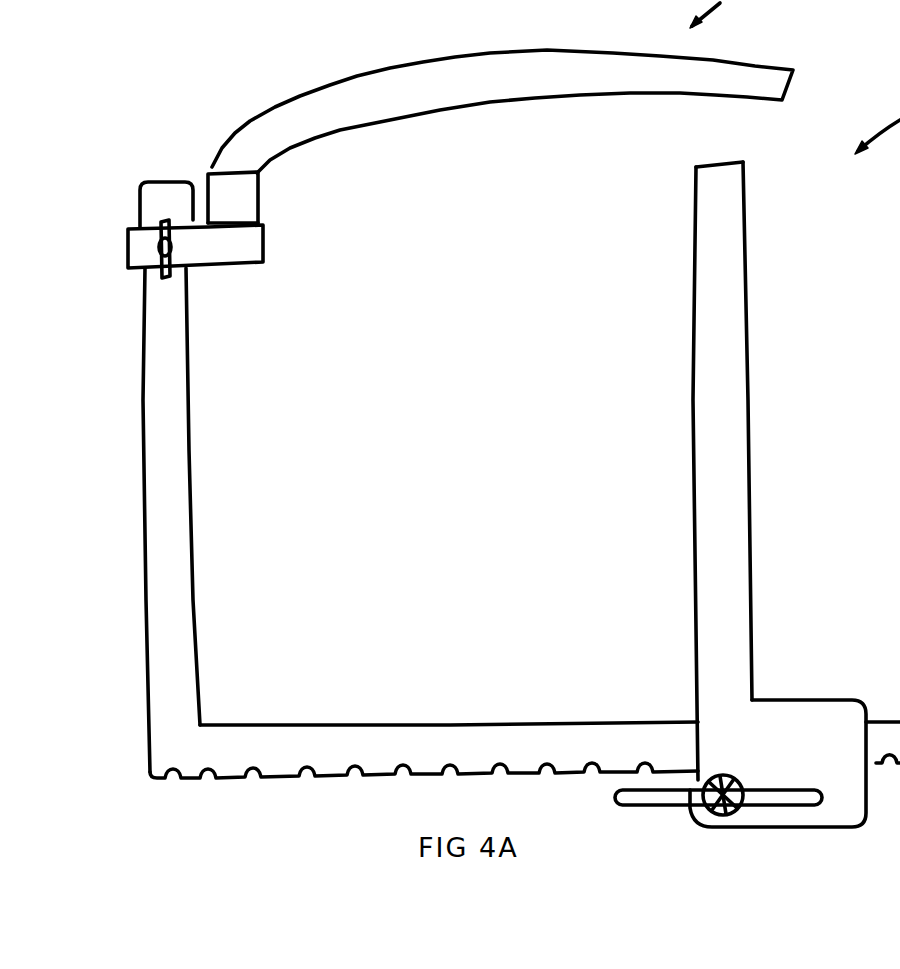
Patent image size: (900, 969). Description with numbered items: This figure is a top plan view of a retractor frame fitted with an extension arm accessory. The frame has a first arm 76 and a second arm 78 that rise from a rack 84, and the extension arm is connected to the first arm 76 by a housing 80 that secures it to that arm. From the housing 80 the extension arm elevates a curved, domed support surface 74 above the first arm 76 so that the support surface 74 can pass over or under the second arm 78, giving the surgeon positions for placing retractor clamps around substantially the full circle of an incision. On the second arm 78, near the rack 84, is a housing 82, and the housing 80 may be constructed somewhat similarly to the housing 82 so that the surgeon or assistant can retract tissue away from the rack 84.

The support surface 74 is at (673, 84).
The first arm 76 is at (180, 439).
The second arm 78 is at (743, 393).
The housing 80 is at (193, 257).
The housing 82 is at (850, 759).
The rack 84 is at (568, 758).